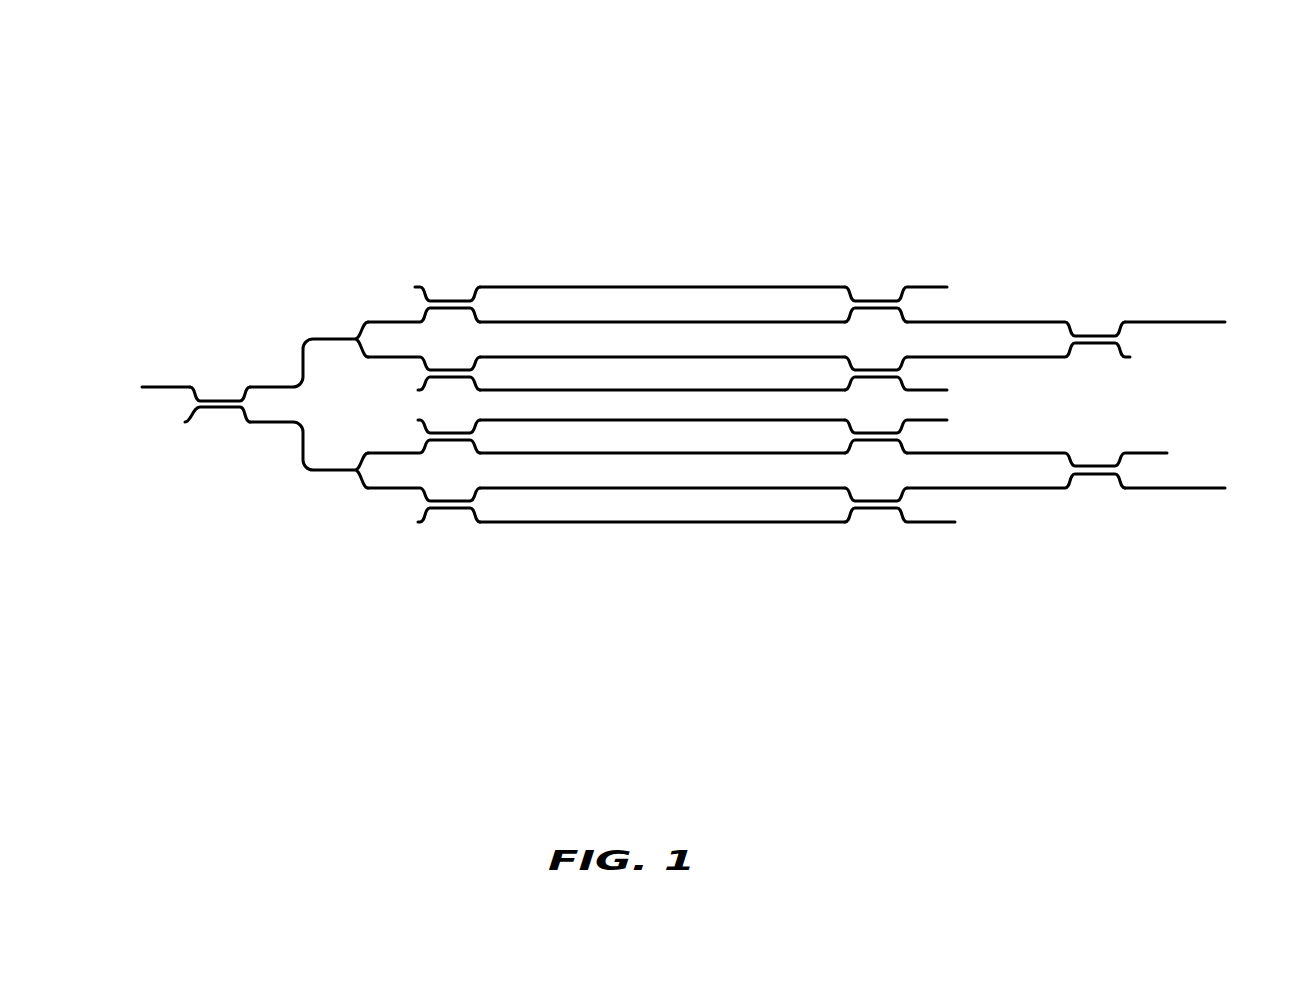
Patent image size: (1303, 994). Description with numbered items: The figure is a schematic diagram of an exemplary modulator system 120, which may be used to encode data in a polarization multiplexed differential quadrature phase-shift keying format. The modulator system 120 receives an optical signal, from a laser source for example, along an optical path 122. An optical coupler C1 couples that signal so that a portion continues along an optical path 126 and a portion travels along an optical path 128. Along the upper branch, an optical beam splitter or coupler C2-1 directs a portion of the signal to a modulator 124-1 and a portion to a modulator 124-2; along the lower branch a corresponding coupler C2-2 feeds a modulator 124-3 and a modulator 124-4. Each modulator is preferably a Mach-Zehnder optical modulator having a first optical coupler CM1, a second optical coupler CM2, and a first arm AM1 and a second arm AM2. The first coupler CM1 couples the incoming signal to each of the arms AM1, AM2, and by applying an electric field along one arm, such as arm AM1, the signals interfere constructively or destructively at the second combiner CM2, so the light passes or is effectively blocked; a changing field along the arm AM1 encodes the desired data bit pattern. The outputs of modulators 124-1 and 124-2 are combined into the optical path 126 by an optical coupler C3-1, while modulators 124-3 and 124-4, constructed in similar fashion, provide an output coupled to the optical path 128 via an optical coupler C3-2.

The modulator system 120 is at (296, 98).
The optical path 122 is at (158, 386).
The optical coupler C1 is at (218, 400).
The optical beam splitter or coupler C2-1 is at (355, 338).
The optical coupler C2-2 is at (355, 470).
The first optical coupler CM1 is at (450, 301).
The modulator 124-1 is at (520, 302).
The modulator 124-2 is at (617, 370).
The modulator 124-3 is at (518, 440).
The modulator 124-4 is at (650, 503).
The first arm AM1 is at (672, 288).
The second arm AM2 is at (727, 322).
The second optical coupler CM2 is at (882, 301).
The optical coupler C3-1 is at (1105, 336).
The optical coupler C3-2 is at (1110, 474).
The optical path 126 is at (1190, 322).
The optical path 128 is at (1195, 488).